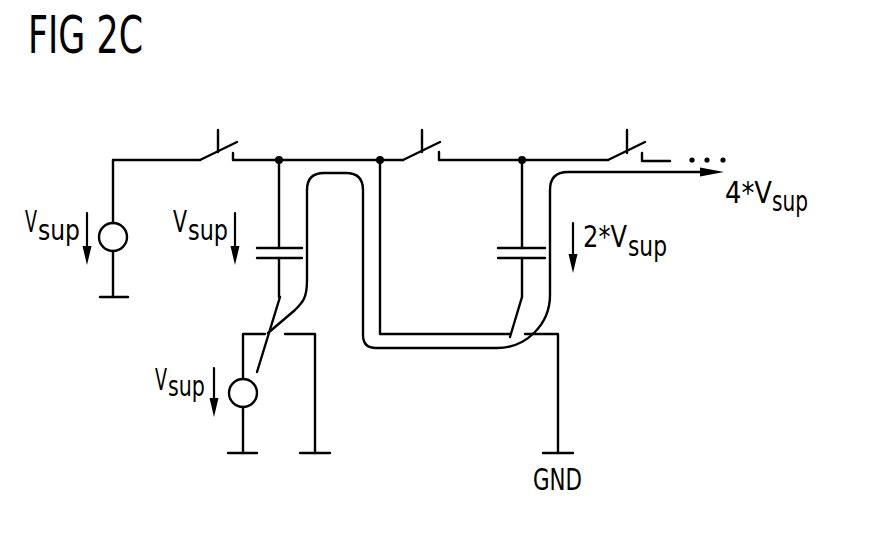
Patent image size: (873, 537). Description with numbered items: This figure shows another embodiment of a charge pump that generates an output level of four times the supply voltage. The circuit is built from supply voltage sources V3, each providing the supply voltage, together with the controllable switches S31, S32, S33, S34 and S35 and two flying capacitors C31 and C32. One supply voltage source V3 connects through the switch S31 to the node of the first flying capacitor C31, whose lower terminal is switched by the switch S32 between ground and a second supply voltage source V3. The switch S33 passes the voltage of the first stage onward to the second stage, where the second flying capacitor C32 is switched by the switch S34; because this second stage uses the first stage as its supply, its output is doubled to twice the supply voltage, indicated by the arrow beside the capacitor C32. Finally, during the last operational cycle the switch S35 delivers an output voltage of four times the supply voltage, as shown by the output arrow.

The controllable switch S31 is at (207, 155).
The controllable switch S32 is at (268, 318).
The controllable switch S33 is at (413, 155).
The controllable switch S34 is at (510, 318).
The controllable switch S35 is at (617, 155).
The capacitor C31 is at (272, 245).
The capacitor C32 is at (515, 245).
The supply voltage source V3 is at (107, 225).